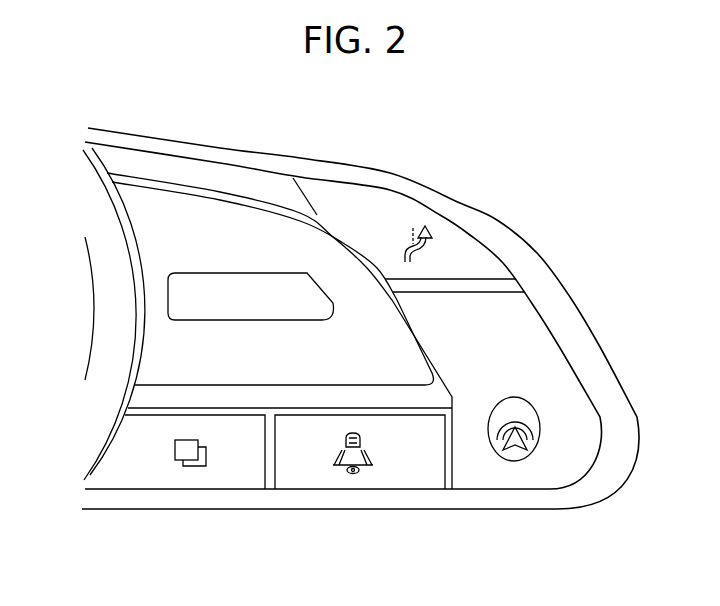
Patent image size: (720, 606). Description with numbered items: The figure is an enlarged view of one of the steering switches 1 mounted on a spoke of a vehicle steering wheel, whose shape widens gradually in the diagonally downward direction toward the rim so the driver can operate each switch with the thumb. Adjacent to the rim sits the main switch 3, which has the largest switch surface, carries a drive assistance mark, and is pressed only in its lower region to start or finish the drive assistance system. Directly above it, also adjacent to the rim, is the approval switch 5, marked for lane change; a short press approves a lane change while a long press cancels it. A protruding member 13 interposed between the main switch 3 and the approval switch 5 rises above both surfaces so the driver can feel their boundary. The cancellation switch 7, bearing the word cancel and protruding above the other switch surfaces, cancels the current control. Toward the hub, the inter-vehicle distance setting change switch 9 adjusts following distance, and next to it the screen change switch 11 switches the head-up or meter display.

The steering switch 1 is at (552, 242).
The main switch 3 is at (550, 358).
The approval switch 5 is at (383, 205).
The cancellation switch 7 is at (168, 293).
The inter-vehicle distance setting change switch 9 is at (397, 475).
The screen change switch 11 is at (225, 477).
The protruding member 13 is at (498, 287).